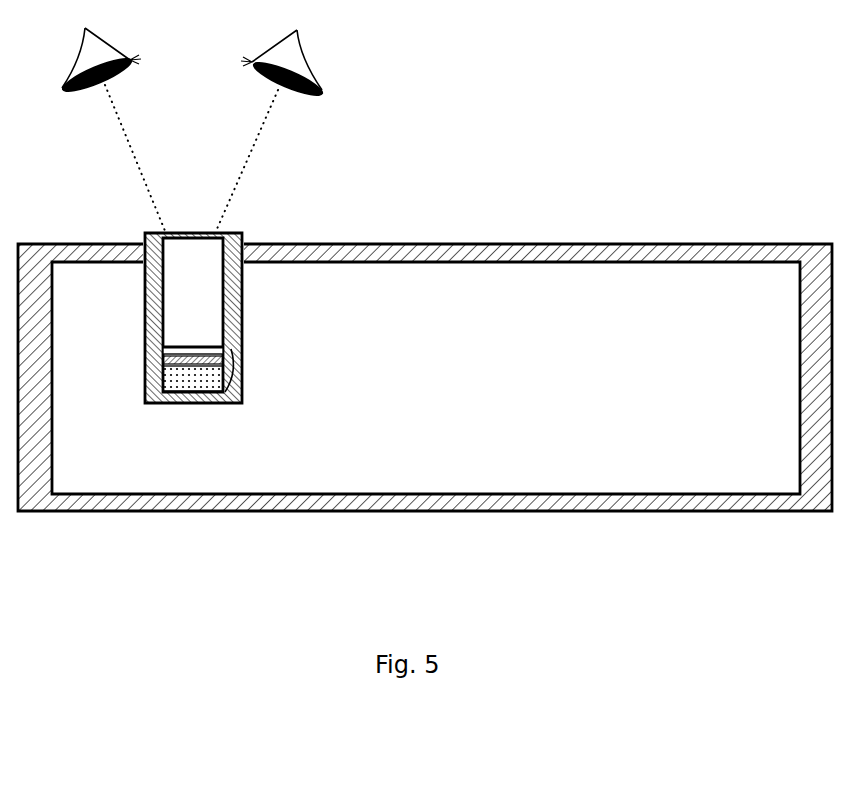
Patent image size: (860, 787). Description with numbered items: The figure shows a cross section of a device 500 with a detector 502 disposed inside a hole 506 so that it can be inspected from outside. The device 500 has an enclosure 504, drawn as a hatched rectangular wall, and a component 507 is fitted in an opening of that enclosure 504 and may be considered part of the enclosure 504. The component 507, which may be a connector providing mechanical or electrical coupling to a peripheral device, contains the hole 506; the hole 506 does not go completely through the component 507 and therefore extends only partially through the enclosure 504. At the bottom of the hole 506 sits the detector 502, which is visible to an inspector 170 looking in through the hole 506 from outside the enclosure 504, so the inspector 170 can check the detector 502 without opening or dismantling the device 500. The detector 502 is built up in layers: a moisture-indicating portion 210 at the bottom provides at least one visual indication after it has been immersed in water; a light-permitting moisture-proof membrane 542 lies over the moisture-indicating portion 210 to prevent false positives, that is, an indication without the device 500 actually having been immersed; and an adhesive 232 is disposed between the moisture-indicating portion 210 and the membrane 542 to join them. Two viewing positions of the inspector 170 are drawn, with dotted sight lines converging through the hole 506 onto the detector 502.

The inspector 170 is at (98, 53).
The device 500 is at (425, 395).
The detector 502 is at (229, 355).
The enclosure 504 is at (633, 503).
The hole 506 is at (195, 247).
The component 507 is at (234, 243).
The light-permitting moisture-proof membrane 542 is at (163, 348).
The adhesive 232 is at (166, 358).
The moisture-indicating portion 210 is at (182, 375).